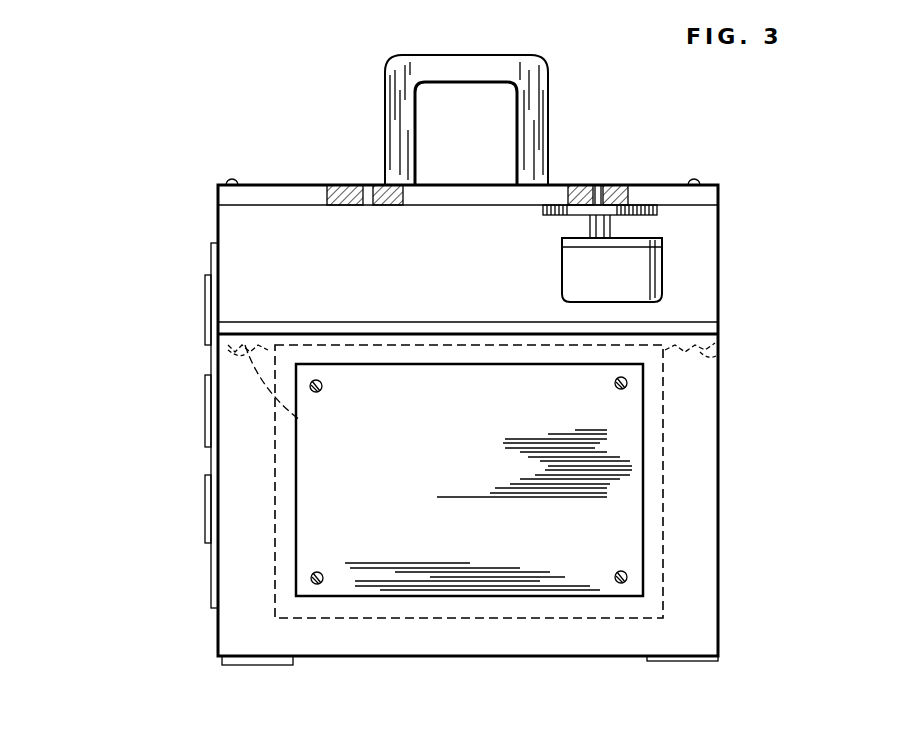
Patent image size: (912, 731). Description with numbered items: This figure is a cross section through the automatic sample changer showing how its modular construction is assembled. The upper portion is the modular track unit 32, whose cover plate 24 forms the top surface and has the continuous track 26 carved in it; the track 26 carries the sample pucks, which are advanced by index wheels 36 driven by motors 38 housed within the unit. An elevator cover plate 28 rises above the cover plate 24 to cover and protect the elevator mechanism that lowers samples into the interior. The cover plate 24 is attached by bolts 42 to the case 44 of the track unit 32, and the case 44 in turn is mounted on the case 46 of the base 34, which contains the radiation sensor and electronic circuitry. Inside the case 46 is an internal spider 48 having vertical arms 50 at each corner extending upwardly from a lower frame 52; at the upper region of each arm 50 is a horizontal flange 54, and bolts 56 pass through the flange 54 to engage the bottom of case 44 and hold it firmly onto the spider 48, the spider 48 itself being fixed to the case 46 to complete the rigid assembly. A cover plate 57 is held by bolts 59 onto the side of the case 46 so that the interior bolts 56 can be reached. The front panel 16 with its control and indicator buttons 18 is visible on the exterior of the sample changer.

The front panel 16 is at (212, 578).
The control and indicator buttons 18 is at (188, 480).
The cover plate 24 is at (273, 197).
The track 26 is at (373, 191).
The elevator cover plate 28 is at (517, 56).
The modular track unit 32 is at (204, 228).
The base 34 is at (755, 463).
The index wheels 36 is at (549, 214).
The motors 38 is at (626, 282).
The bolts 42 is at (232, 184).
The case 44 is at (720, 243).
The case 46 is at (698, 591).
The internal spider 48 is at (272, 596).
The vertical arms 50 is at (232, 505).
The lower frame 52 is at (672, 640).
The horizontal flange 54 is at (752, 318).
The bolts 56 is at (230, 354).
The cover plate 57 is at (486, 488).
The bolts 59 is at (323, 386).